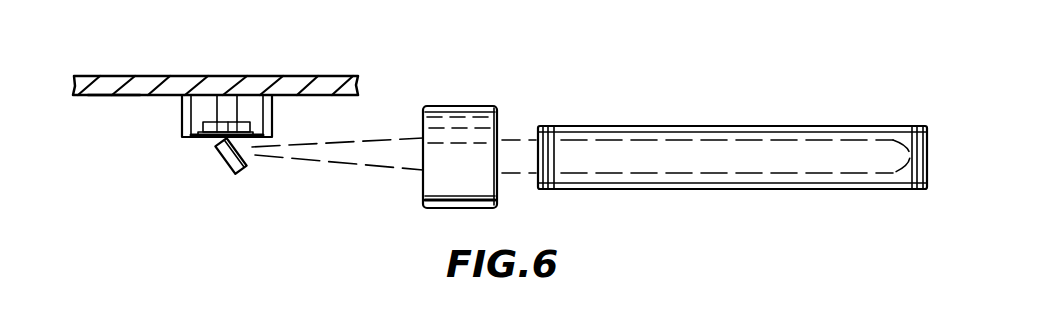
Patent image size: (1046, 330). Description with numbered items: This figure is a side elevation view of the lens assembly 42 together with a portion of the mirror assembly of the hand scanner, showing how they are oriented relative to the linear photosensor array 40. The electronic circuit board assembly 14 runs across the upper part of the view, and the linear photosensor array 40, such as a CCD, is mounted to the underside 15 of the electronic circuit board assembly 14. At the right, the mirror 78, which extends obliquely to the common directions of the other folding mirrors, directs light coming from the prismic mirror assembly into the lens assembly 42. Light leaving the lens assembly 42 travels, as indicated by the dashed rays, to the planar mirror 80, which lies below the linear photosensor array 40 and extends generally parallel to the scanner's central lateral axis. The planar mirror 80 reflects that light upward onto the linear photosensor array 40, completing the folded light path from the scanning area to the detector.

The electronic circuit board assembly 14 is at (225, 73).
The underside 15 is at (100, 96).
The linear photosensor array 40 is at (182, 127).
The lens assembly 42 is at (494, 107).
The mirror 78 is at (848, 126).
The planar mirror 80 is at (230, 169).